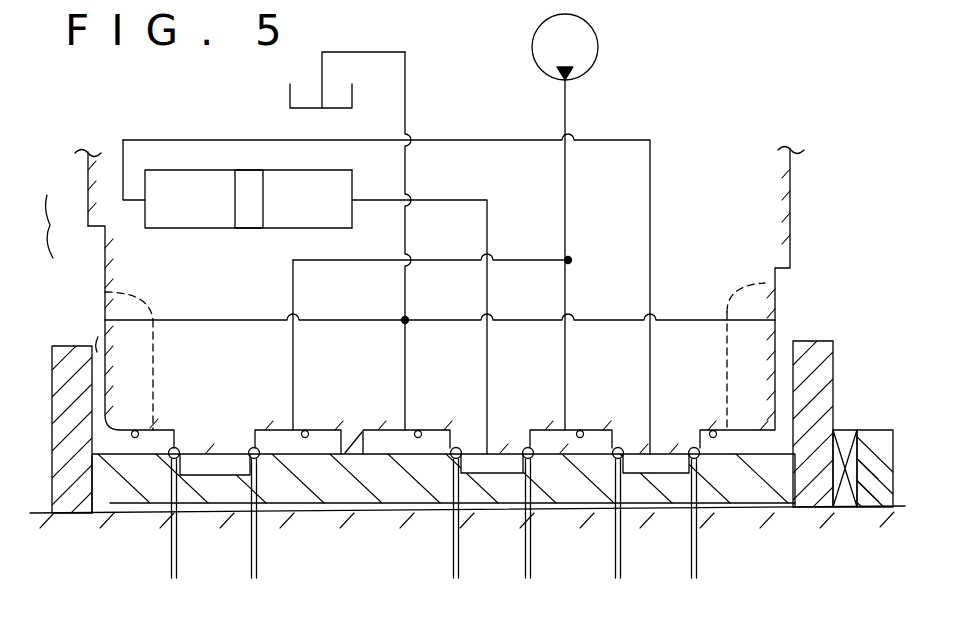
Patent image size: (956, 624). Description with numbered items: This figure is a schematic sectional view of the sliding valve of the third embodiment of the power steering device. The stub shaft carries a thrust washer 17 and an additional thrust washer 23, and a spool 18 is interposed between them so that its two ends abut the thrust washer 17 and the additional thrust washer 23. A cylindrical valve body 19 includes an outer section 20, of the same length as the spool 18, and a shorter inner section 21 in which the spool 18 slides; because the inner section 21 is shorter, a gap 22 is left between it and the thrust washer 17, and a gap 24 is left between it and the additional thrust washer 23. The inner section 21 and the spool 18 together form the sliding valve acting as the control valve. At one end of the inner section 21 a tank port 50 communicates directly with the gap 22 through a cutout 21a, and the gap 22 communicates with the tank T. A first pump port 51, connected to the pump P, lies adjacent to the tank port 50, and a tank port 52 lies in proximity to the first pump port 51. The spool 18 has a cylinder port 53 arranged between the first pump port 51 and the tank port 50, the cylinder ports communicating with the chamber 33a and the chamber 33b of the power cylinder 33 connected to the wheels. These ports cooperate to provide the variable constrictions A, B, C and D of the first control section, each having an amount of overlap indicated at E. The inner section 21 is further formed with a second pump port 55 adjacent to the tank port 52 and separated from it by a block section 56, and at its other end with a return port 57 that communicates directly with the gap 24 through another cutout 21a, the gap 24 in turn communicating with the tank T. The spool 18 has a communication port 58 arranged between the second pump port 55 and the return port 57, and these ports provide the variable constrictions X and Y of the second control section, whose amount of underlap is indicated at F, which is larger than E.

The thrust washer 17 is at (820, 345).
The spool 18 is at (360, 495).
The valve body 19 is at (36, 226).
The outer section 20 is at (88, 191).
The inner section 21 is at (105, 258).
The cutout 21a is at (158, 352).
The gap 22 is at (790, 236).
The additional thrust washer 23 is at (61, 346).
The gap 24 is at (86, 333).
The power cylinder 33 is at (246, 162).
The chamber 33a is at (180, 177).
The chamber 33b is at (283, 215).
The tank port 50 is at (714, 430).
The first pump port 51 is at (581, 430).
The tank port 52 is at (418, 430).
The cylinder port 53 is at (655, 477).
The second pump port 55 is at (306, 430).
The block section 56 is at (349, 450).
The return port 57 is at (136, 430).
The communication port 58 is at (206, 478).
The pump P is at (598, 50).
The tank T is at (352, 97).
The variable constriction A is at (616, 460).
The variable constriction B is at (530, 460).
The variable constriction C is at (697, 460).
The variable constriction D is at (455, 460).
The variable constriction X is at (257, 460).
The variable constriction Y is at (170, 460).
The amount of overlap E is at (722, 563).
The amount of underlap F is at (285, 566).